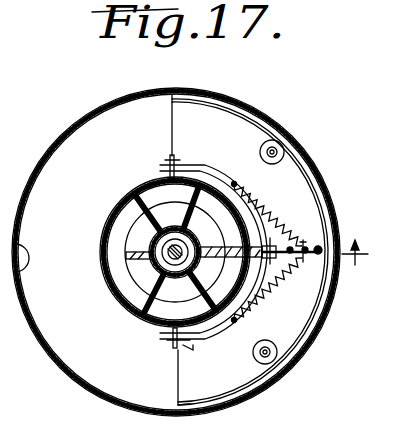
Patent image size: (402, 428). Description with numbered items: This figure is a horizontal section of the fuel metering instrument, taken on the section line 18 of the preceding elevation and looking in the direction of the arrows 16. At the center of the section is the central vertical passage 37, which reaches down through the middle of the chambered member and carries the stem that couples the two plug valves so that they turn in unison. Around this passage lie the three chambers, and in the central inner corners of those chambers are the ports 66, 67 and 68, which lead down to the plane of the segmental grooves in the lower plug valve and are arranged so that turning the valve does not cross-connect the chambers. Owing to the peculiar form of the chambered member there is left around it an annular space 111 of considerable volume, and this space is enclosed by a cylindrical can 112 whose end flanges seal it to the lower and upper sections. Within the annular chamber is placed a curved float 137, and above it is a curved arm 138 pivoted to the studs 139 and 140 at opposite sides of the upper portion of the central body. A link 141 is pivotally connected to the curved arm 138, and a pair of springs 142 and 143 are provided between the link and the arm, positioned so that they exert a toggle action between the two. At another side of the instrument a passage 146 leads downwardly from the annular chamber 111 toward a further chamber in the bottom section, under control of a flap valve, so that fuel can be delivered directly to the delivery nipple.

The direction arrow 16 is at (357, 267).
The section line arrows 18 is at (138, 190).
The central vertical passage 37 is at (160, 268).
The port 66 is at (128, 262).
The port 67 is at (191, 175).
The port 68 is at (152, 326).
The annular space 111 is at (82, 340).
The cylindrical can 112 is at (176, 258).
The curved float 137 is at (278, 167).
The curved arm 138 is at (220, 332).
The stud 139 is at (172, 354).
The stud 140 is at (170, 162).
The link 141 is at (304, 243).
The spring 142 is at (258, 212).
The spring 143 is at (168, 246).
The passage 146 is at (268, 388).